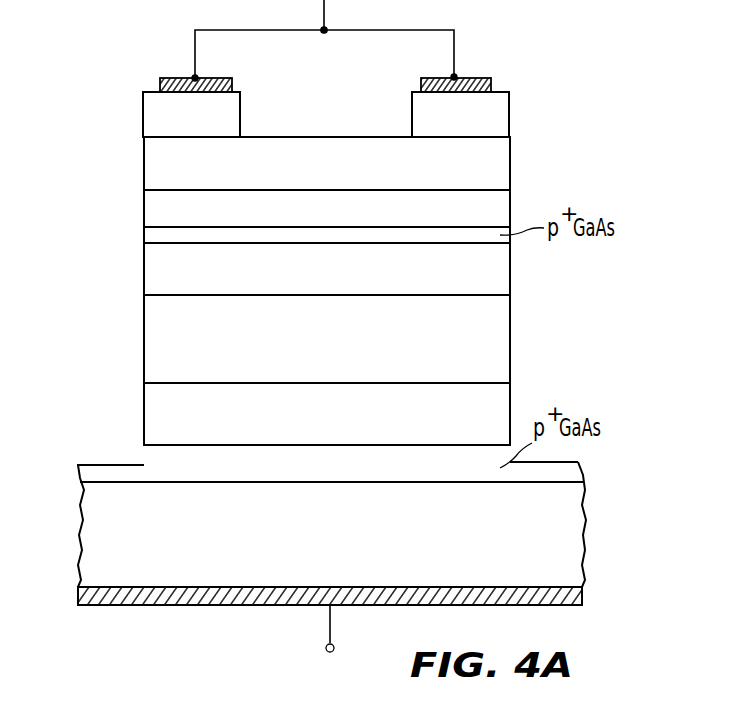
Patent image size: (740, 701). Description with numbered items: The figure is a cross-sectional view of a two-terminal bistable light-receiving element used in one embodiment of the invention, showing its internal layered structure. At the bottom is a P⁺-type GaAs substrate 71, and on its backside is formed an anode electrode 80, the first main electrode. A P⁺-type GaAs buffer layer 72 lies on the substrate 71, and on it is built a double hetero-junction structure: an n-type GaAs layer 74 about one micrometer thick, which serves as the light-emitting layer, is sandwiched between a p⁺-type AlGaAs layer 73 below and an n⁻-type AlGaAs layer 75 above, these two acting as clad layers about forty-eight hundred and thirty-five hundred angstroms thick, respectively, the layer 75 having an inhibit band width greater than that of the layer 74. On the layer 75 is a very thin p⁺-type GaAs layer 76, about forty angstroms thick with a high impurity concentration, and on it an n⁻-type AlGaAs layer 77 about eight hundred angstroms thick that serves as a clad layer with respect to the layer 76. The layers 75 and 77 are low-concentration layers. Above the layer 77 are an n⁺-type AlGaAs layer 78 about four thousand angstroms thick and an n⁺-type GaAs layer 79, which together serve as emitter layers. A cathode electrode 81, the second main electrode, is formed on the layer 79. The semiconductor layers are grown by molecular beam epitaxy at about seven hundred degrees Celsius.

The P⁺-type GaAs substrate 71 is at (90, 527).
The P⁺-type GaAs buffer layer 72 is at (93, 470).
The p⁺-type AlGaAs layer 73 is at (145, 418).
The n-type GaAs layer 74 is at (145, 356).
The n⁻-type AlGaAs layer 75 is at (145, 284).
The p⁺-type GaAs layer 76 is at (145, 236).
The n⁻-type AlGaAs layer 77 is at (145, 206).
The n⁺-type AlGaAs layer 78 is at (145, 164).
The n⁺-type GaAs layer 79 is at (145, 104).
The anode electrode 80 is at (123, 606).
The cathode electrode 81 is at (421, 80).